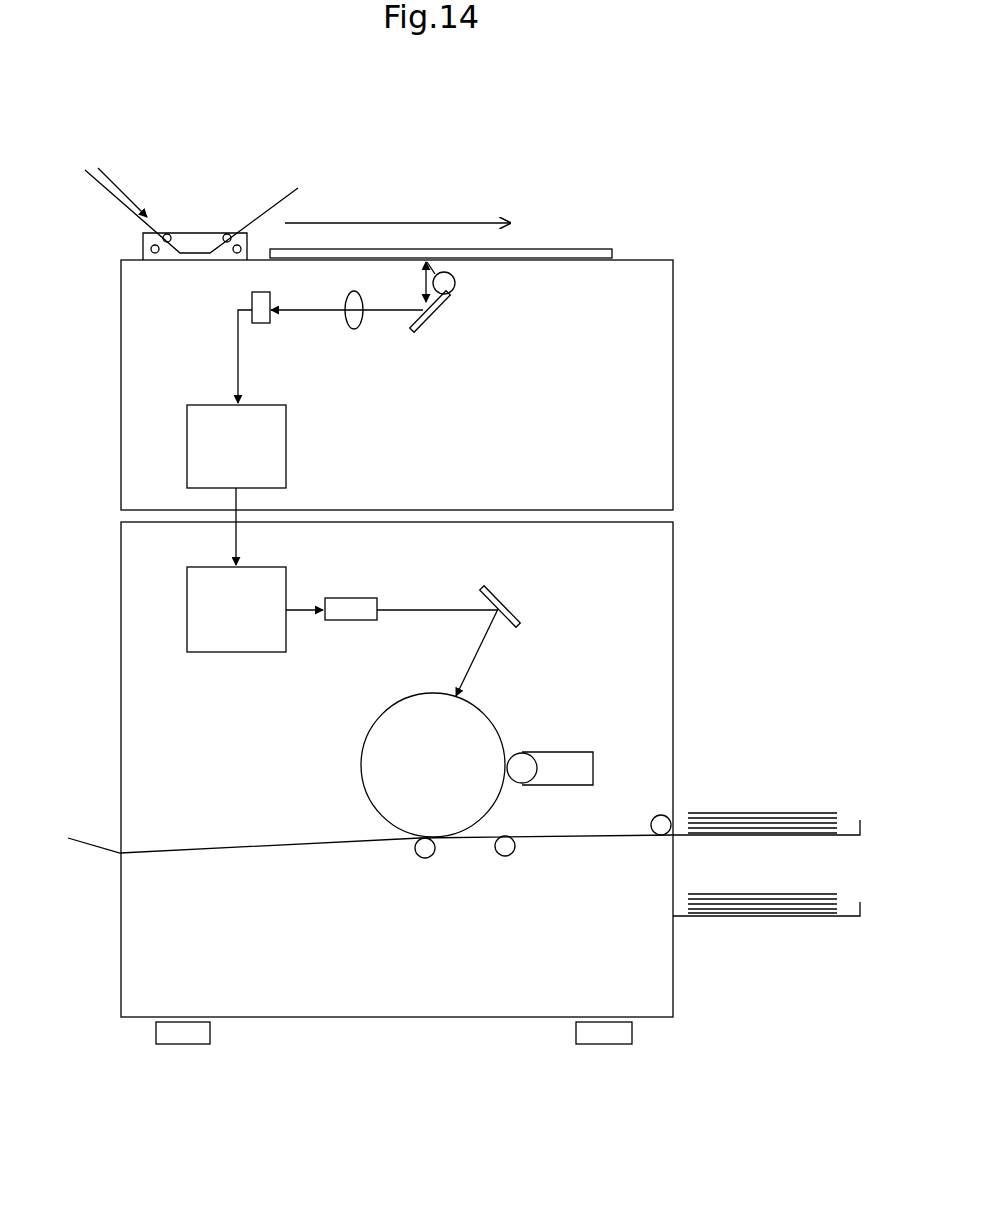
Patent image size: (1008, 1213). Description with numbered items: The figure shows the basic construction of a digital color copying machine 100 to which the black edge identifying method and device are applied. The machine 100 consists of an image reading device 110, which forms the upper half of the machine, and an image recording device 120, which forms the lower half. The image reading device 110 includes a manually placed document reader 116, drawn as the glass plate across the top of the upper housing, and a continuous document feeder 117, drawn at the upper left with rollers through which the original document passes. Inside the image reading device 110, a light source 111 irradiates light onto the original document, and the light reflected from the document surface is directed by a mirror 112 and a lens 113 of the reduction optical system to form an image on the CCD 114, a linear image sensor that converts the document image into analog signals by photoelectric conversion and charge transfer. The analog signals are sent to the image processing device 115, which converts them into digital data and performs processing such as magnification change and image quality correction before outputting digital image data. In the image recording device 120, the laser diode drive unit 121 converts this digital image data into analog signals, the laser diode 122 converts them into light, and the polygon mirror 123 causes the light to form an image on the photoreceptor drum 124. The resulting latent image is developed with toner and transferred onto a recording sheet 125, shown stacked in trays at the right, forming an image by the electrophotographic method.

The digital color copying machine 100 is at (658, 137).
The image reading device 110 is at (673, 418).
The light source 111 is at (455, 285).
The mirror 112 is at (428, 323).
The lens 113 is at (365, 313).
The CCD 114 is at (252, 297).
The image processing device 115 is at (286, 445).
The manually placed document reader 116 is at (595, 247).
The continuous document feeder 117 is at (237, 235).
The image recording device 120 is at (673, 677).
The laser diode drive unit 121 is at (253, 567).
The laser diode 122 is at (363, 598).
The polygon mirror 123 is at (492, 590).
The photoreceptor drum 124 is at (362, 765).
The recording sheet 125 is at (755, 813).